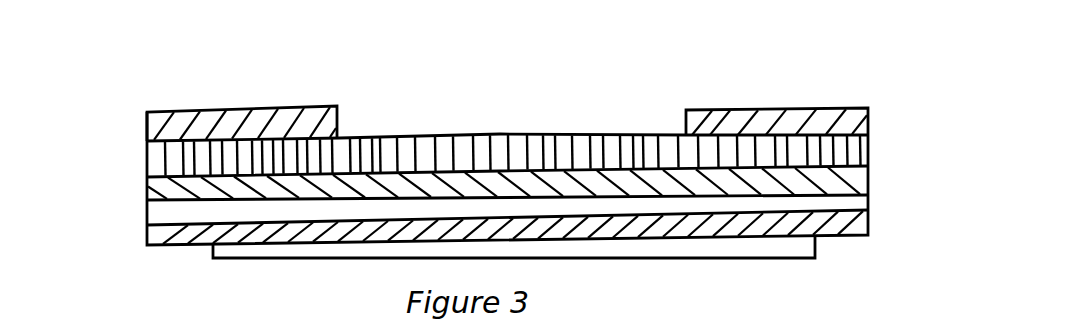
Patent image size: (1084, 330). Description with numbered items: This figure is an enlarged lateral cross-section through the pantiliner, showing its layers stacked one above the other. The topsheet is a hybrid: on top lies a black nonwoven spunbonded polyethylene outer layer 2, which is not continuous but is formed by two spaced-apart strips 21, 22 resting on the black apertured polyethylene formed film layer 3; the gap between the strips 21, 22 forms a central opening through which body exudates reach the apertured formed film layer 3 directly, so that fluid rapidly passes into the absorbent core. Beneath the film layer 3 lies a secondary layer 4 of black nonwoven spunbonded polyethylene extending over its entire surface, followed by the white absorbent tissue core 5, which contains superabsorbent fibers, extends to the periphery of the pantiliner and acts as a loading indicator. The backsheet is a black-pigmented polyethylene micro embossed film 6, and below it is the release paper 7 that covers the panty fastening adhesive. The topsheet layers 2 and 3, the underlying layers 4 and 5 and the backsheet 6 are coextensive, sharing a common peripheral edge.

The nonwoven outer layer 2 is at (247, 110).
The strip 21 is at (198, 112).
The strip 22 is at (840, 132).
The apertured polymeric formed film layer 3 is at (582, 140).
The secondary layer 4 is at (470, 199).
The absorbent tissue core 5 is at (233, 206).
The polyethylene micro embossed film 6 is at (145, 240).
The release paper 7 is at (808, 245).